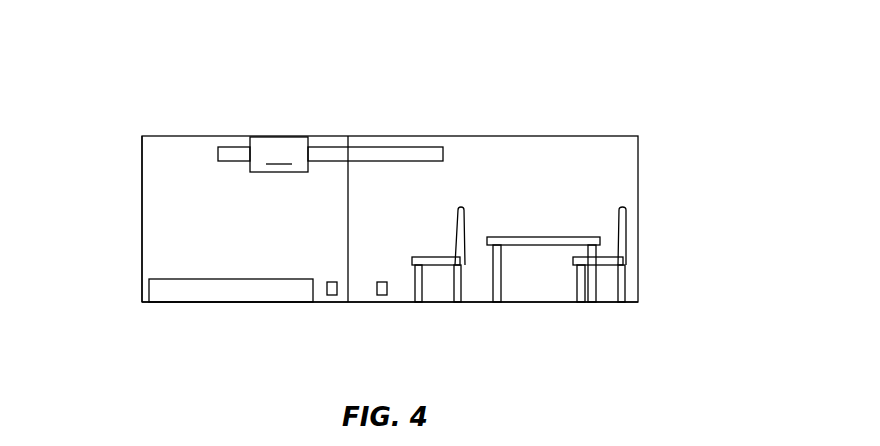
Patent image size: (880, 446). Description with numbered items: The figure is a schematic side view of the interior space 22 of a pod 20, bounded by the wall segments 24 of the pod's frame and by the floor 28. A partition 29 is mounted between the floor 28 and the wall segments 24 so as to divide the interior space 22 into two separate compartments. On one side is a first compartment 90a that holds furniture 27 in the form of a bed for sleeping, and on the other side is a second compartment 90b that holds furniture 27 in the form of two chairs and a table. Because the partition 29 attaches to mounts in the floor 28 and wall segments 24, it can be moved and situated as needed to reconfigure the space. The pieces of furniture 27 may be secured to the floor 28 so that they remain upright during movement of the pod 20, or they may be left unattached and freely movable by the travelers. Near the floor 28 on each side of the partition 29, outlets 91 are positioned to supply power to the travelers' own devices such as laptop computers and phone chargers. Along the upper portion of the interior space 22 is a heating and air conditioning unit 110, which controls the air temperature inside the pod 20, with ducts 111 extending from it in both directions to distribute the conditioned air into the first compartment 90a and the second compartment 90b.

The pod 20 is at (648, 108).
The interior space 22 is at (207, 177).
The wall segment 24 is at (142, 192).
The furniture 27 is at (212, 297).
The floor 28 is at (553, 302).
The partition 29 is at (348, 188).
The first compartment 90a is at (168, 248).
The second compartment 90b is at (597, 190).
The outlet 91 is at (327, 295).
The HVAC unit 110 is at (279, 154).
The duct 111 is at (237, 150).